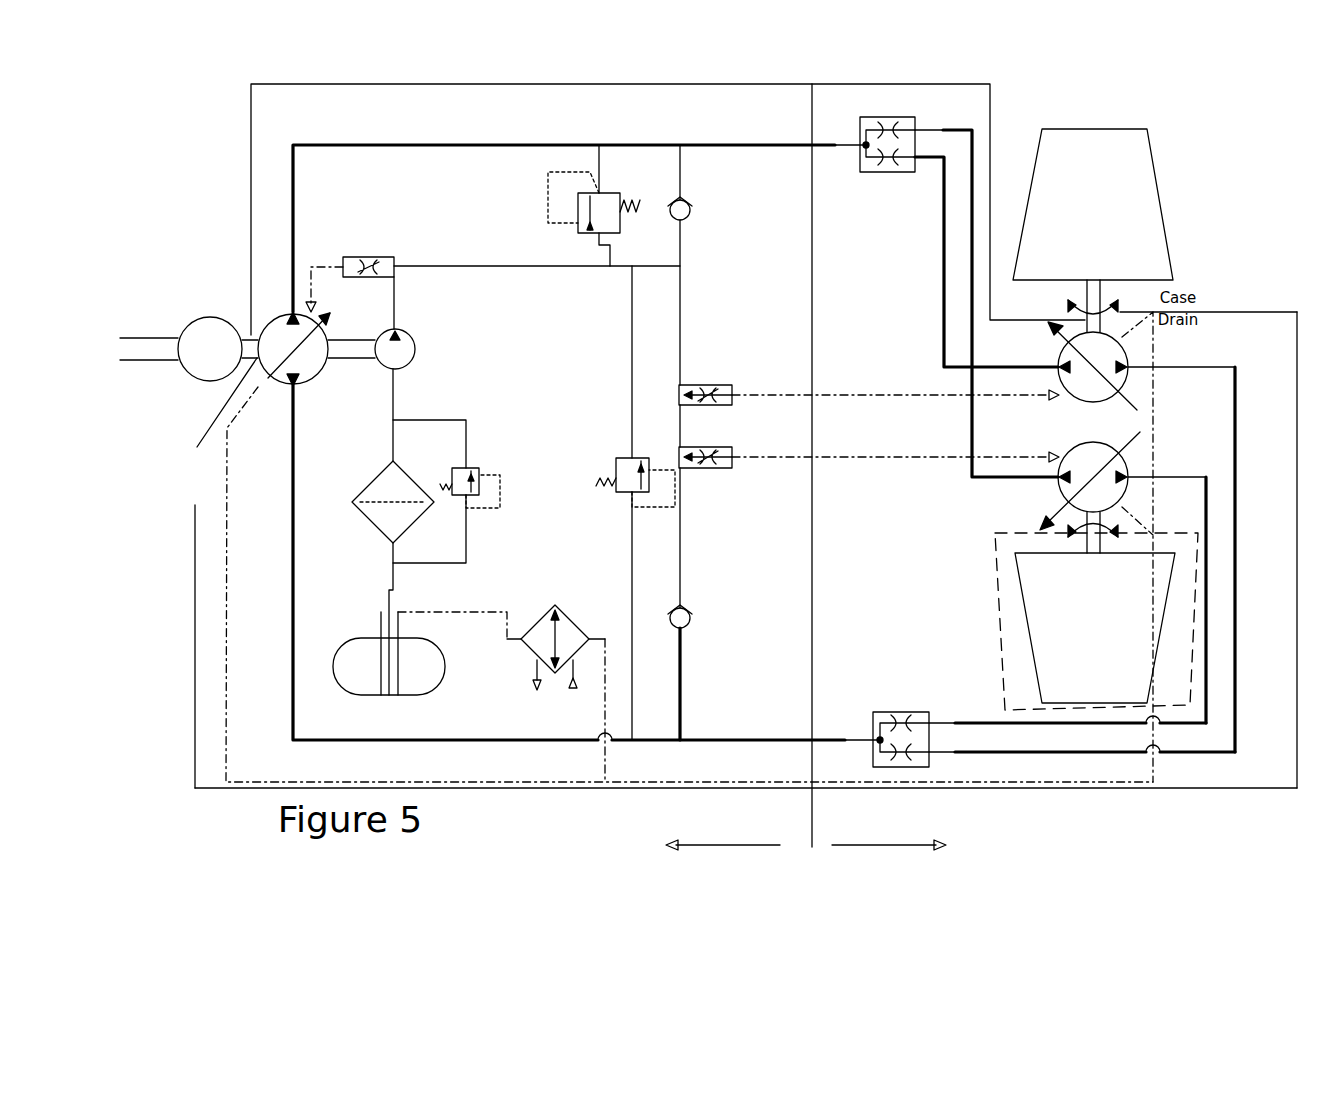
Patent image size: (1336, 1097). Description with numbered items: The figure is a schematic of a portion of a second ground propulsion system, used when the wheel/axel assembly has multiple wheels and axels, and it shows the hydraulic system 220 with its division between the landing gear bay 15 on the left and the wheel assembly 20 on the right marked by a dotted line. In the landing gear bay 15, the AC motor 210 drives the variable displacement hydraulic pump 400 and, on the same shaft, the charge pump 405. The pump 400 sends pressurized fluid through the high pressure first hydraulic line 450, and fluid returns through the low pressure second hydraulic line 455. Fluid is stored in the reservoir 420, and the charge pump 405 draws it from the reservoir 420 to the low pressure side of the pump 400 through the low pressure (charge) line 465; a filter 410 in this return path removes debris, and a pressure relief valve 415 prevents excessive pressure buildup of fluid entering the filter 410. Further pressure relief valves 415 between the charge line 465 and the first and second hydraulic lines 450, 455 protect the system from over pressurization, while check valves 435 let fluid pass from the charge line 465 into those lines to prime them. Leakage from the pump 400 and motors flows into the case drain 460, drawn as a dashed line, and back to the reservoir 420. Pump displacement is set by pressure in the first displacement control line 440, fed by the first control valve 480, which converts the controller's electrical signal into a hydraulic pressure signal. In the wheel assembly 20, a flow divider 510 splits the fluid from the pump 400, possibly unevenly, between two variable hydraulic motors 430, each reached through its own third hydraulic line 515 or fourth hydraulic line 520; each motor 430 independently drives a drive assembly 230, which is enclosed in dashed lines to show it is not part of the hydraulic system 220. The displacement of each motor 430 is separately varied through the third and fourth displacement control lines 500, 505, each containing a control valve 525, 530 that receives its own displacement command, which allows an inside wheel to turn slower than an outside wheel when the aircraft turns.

The landing gear bay 15 is at (701, 869).
The wheel assembly 20 is at (925, 869).
The AC motor 210 is at (189, 358).
The hydraulic system 220 is at (190, 568).
The drive assembly 230 is at (1096, 417).
The variable displacement hydraulic pump 400 is at (316, 359).
The charge pump 405 is at (427, 369).
The filter 410 is at (414, 557).
The pressure relief valve 415 is at (536, 463).
The reservoir 420 is at (389, 676).
The variable displacement hydraulic motor 430 is at (1096, 531).
The check valve 435 is at (710, 442).
The first displacement control line 440 is at (349, 230).
The first hydraulic line 450 is at (579, 209).
The second hydraulic line 455 is at (586, 562).
The case drain 460 is at (666, 584).
The low pressure (charge) line 465 is at (537, 503).
The first control valve 480 is at (395, 230).
The third displacement control line 500 is at (895, 354).
The fourth displacement control line 505 is at (895, 516).
The flow divider 510 is at (943, 442).
The third hydraulic line 515 is at (1082, 559).
The fourth hydraulic line 520 is at (1106, 651).
The third control valve 525 is at (713, 350).
The fourth control valve 530 is at (714, 502).